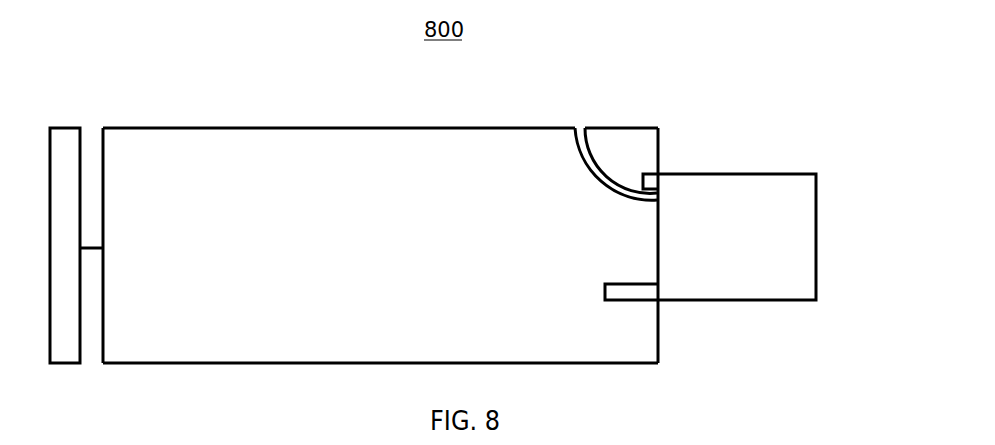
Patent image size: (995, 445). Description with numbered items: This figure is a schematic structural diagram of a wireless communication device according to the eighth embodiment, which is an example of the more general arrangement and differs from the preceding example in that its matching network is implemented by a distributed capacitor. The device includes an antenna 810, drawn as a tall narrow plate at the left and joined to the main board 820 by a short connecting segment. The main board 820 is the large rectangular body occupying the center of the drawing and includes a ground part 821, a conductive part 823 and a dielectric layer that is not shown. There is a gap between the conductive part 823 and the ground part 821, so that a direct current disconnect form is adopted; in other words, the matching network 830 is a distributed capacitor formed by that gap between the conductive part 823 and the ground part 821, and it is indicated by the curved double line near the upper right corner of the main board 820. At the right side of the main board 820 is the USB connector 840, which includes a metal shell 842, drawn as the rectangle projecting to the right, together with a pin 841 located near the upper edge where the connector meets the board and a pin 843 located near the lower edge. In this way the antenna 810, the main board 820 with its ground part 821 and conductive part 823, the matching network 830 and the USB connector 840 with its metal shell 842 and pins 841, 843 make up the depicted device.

The antenna 810 is at (65, 125).
The main board 820 is at (380, 205).
The ground part 821 is at (277, 128).
The conductive part 823 is at (547, 119).
The matching network 830 is at (582, 165).
The USB connector 840 is at (740, 232).
The pin 841 is at (648, 173).
The metal shell 842 is at (737, 173).
The pin 843 is at (633, 301).